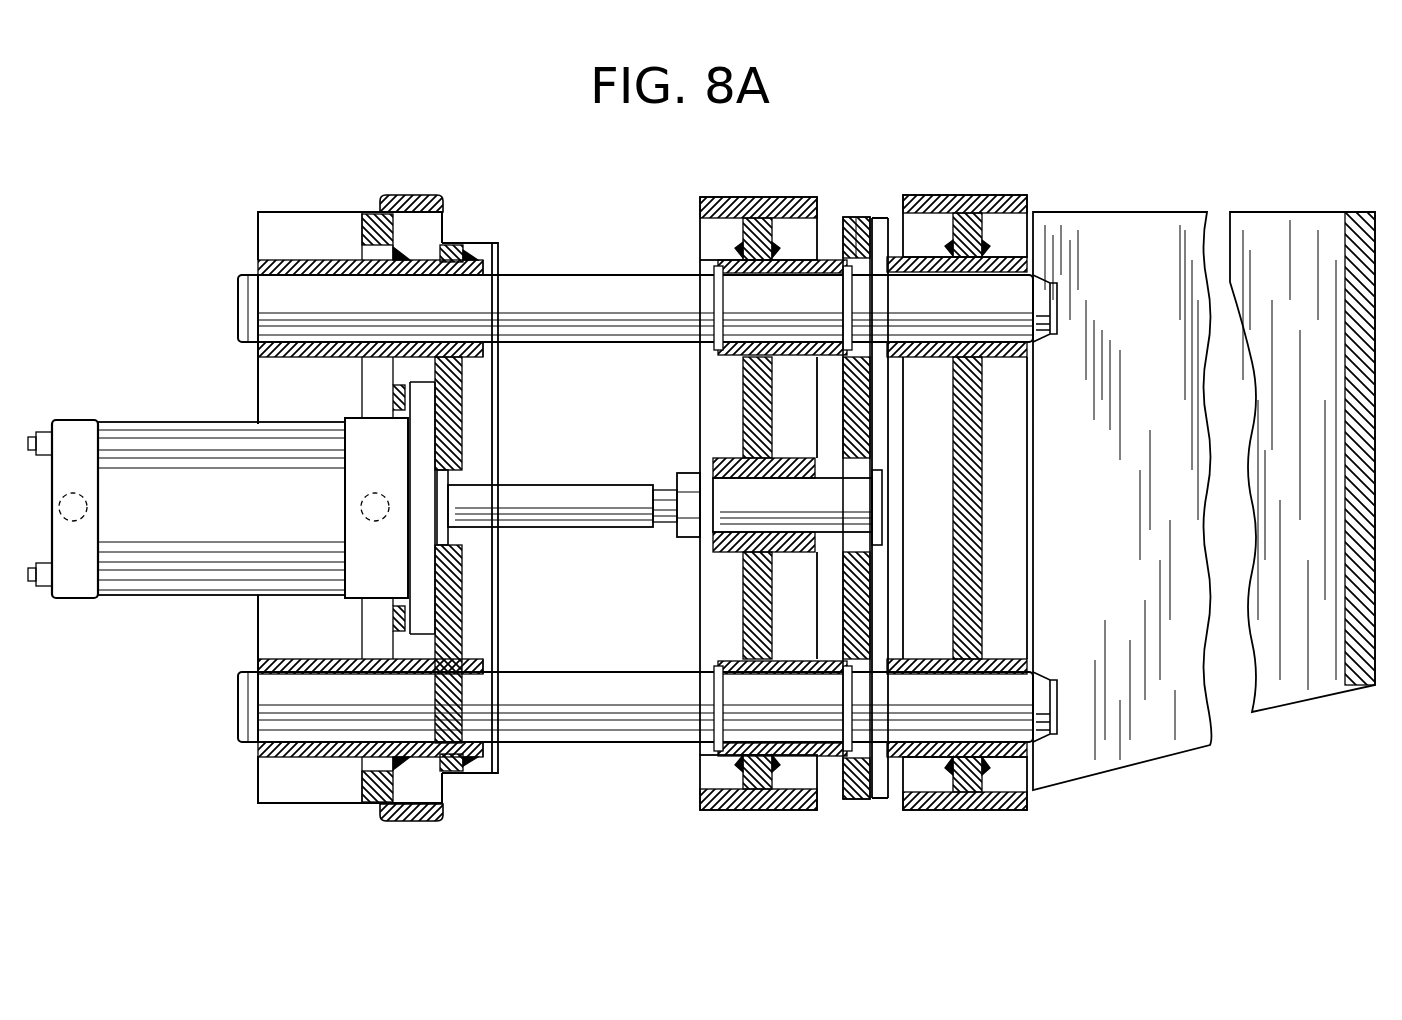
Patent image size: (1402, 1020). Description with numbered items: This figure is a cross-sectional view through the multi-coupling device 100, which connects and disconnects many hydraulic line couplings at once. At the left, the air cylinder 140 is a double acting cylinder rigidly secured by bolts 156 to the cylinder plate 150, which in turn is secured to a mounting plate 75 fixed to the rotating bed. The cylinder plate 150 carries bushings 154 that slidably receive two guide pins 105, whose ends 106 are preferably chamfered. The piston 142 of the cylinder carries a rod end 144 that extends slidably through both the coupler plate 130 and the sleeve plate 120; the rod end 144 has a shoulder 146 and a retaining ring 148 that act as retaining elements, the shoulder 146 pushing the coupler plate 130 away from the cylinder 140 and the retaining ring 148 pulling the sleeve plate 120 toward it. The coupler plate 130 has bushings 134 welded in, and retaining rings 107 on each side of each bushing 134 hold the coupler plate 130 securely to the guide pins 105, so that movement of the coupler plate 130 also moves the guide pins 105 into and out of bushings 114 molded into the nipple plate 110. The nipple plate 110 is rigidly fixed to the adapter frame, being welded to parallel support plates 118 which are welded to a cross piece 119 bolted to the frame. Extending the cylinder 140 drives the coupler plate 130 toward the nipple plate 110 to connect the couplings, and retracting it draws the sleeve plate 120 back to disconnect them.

The multi-coupling device 100 is at (320, 140).
The mounting plate 75 is at (395, 197).
The bushings 154 is at (302, 258).
The cylinder plate 150 is at (445, 248).
The guide pins 105 is at (584, 284).
The ends of the guide pins 106 is at (1043, 300).
The retaining rings 107 is at (852, 303).
The coupler plate 130 is at (752, 198).
The bushings 134 is at (844, 216).
The sleeve plate 120 is at (868, 216).
The bushings 114 is at (1032, 268).
The nipple plate 110 is at (975, 204).
The parallel support plates 118 is at (1176, 211).
The cross piece 119 is at (1350, 211).
The bolts 156 is at (392, 398).
The air cylinder 140 is at (148, 542).
The piston 142 is at (560, 516).
The shoulder 146 is at (692, 546).
The rod end 144 is at (822, 508).
The retaining ring 148 is at (878, 470).